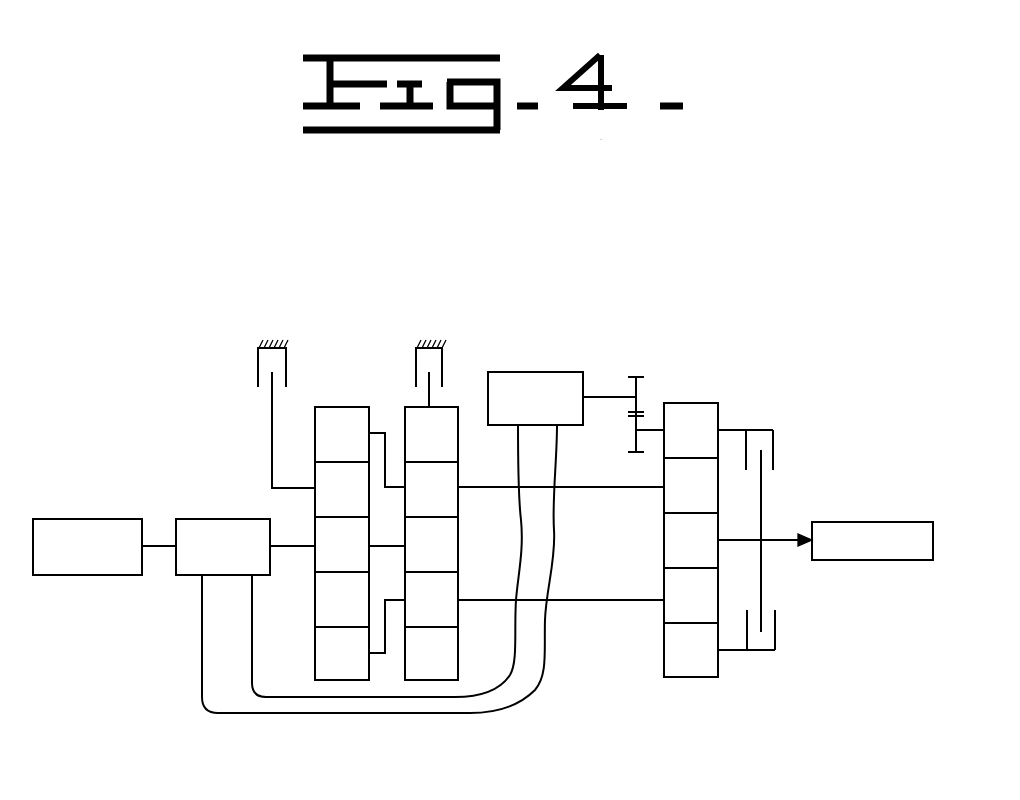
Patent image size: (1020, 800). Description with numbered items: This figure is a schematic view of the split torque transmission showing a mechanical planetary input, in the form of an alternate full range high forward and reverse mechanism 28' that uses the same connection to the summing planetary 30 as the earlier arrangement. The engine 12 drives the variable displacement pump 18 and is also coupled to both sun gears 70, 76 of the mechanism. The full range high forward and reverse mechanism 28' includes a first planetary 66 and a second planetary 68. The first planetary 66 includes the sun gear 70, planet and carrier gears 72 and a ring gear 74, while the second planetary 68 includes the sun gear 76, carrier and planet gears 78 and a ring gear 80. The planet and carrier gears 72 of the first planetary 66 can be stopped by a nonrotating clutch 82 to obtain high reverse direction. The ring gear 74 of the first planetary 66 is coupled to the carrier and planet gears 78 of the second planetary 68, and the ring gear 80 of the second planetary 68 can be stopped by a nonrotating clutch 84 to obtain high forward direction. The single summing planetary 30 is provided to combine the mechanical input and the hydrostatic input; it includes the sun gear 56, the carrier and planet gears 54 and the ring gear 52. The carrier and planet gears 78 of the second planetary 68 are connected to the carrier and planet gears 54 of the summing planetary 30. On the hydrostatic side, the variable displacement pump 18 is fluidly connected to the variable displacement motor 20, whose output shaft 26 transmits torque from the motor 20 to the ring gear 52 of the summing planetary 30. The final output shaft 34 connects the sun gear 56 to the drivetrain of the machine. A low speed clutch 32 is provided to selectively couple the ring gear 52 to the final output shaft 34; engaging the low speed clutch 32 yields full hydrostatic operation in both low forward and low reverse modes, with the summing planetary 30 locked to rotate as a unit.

The engine 12 is at (80, 519).
The variable displacement pump 18 is at (205, 519).
The variable displacement motor 20 is at (533, 372).
The output shaft 26 is at (606, 397).
The full range high forward and reverse mechanism 28' is at (379, 600).
The summing planetary 30 is at (676, 694).
The low speed clutch 32 is at (773, 430).
The final output shaft 34 is at (790, 538).
The ring gear 52 is at (664, 447).
The carrier and planet gears 54 is at (664, 507).
The sun gear 56 is at (664, 553).
The first planetary 66 is at (335, 395).
The second planetary 68 is at (463, 395).
The sun gear 70 is at (315, 553).
The planet and carrier gears 72 is at (315, 508).
The ring gear 74 is at (362, 407).
The sun gear 76 is at (458, 565).
The carrier and planet gears 78 is at (450, 614).
The ring gear 80 is at (447, 452).
The nonrotating clutch 82 is at (267, 340).
The nonrotating clutch 84 is at (437, 340).